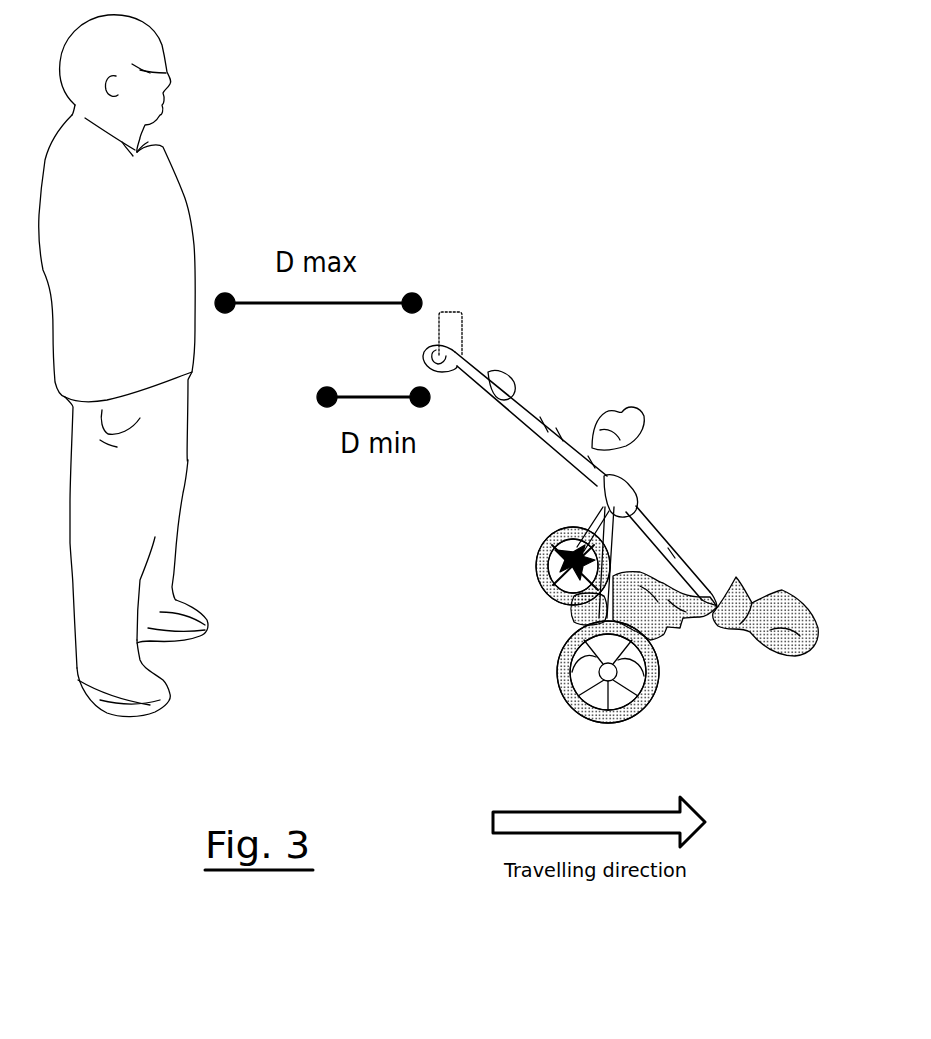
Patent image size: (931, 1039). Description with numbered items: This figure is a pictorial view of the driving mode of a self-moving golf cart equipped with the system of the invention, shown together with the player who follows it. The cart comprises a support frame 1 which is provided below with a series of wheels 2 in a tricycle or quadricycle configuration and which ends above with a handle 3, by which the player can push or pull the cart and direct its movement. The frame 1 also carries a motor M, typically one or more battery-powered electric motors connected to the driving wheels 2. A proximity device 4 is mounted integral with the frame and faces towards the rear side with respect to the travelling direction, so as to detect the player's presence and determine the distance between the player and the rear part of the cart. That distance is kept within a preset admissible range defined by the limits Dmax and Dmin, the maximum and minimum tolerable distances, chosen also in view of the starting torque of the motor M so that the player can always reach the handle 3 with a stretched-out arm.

The support frame 1 is at (545, 406).
The wheels 2 is at (682, 708).
The handle 3 is at (460, 368).
The proximity device 4 is at (452, 313).
The motor M is at (600, 603).